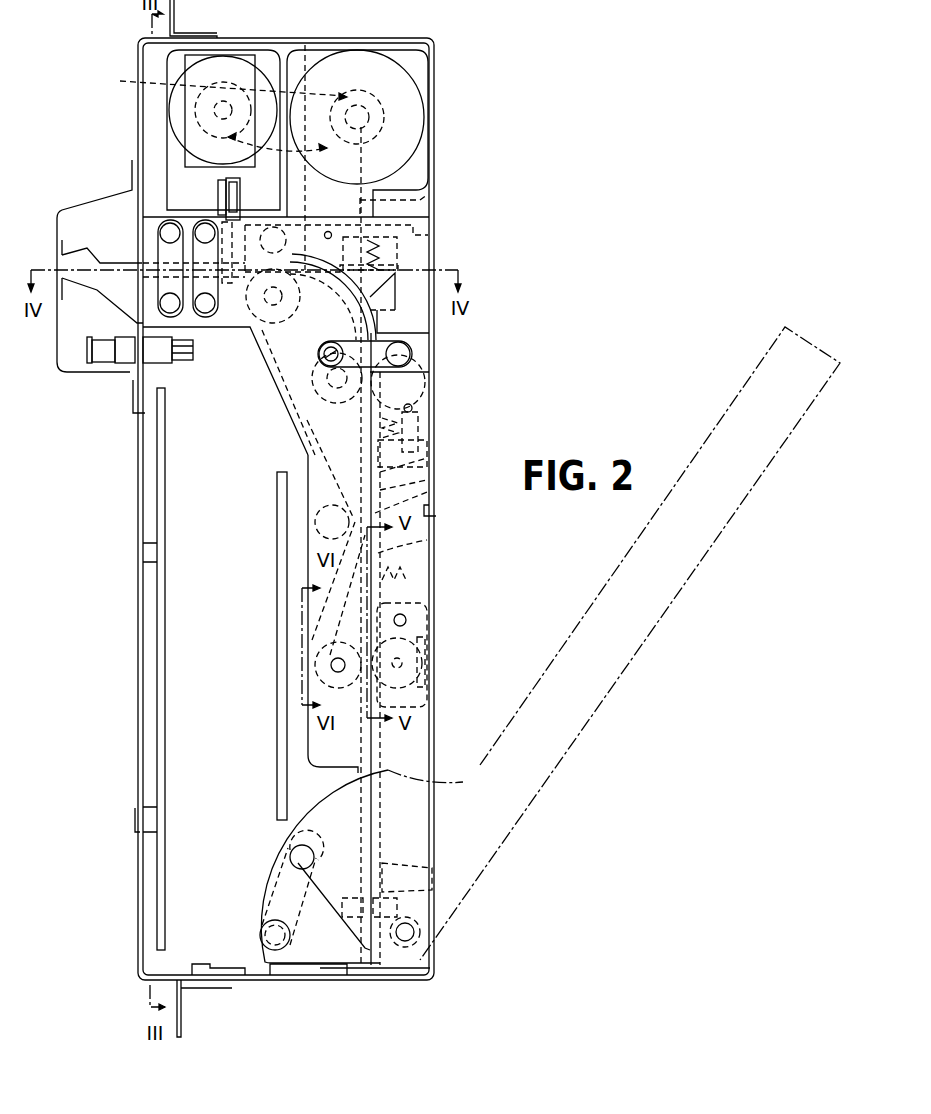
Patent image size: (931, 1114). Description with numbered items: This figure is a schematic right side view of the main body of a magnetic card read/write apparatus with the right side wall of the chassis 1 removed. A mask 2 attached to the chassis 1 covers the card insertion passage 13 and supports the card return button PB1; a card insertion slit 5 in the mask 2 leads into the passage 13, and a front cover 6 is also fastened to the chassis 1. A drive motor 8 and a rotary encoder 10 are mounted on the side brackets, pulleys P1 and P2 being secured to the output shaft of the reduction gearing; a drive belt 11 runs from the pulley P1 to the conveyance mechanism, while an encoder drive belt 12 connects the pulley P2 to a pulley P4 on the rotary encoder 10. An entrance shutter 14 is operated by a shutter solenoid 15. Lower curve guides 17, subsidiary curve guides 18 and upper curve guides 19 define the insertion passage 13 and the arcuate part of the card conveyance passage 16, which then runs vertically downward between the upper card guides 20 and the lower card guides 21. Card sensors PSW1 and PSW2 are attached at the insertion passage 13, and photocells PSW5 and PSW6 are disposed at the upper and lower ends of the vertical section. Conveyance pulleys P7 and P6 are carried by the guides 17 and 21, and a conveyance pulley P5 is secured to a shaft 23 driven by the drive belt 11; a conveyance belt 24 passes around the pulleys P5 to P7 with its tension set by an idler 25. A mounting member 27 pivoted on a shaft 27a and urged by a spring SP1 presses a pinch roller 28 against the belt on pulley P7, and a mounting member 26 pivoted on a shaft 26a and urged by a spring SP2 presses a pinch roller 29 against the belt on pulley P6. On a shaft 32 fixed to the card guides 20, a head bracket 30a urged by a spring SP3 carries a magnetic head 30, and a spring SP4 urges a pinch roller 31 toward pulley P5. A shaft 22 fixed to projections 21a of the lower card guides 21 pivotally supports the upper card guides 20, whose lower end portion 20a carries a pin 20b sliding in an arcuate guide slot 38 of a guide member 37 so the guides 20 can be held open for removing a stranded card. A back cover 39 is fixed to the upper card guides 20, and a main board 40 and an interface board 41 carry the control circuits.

The chassis 1 is at (393, 45).
The mask 2 is at (63, 352).
The card insertion slit 5 is at (103, 272).
The front cover 6 is at (143, 450).
The drive motor 8 is at (418, 92).
The rotary encoder 10 is at (178, 102).
The drive belt 11 is at (429, 196).
The encoder drive belt 12 is at (306, 50).
The card insertion passage 13 is at (135, 256).
The entrance shutter 14 is at (220, 200).
The shutter solenoid 15 is at (195, 125).
The card conveyance passage 16 is at (430, 470).
The lower curve guides 17 is at (393, 280).
The subsidiary curve guides 18 is at (148, 237).
The upper curve guides 19 is at (374, 327).
The upper card guides 20 is at (403, 755).
The lower end portion 20a is at (310, 905).
The pin 20b is at (277, 965).
The lower card guides 21 is at (320, 745).
The projections 21a is at (394, 978).
The shaft 22 is at (414, 941).
The shaft 23 is at (338, 657).
The conveyance belt 24 is at (430, 538).
The idler 25 is at (430, 485).
The mounting member 26 is at (430, 353).
The shaft 26a is at (412, 408).
The mounting member 27 is at (430, 216).
The shaft 27a is at (331, 231).
The pinch roller 28 is at (262, 222).
The pinch roller 29 is at (432, 386).
The magnetic head 30 is at (426, 695).
The head bracket 30a is at (412, 606).
The pinch roller 31 is at (424, 660).
The shaft 32 is at (407, 620).
The guide members 37 is at (250, 893).
The arcuate guide slot 38 is at (307, 881).
The back cover 39 is at (447, 513).
The main board 40 is at (157, 485).
The interface board 41 is at (276, 500).
The pulley P1 is at (374, 114).
The pulley P2 is at (362, 90).
The pulley P4 is at (221, 110).
The conveyance pulley P5 is at (278, 655).
The conveyance pulley P6 is at (322, 405).
The conveyance pulley P7 is at (268, 332).
The card return button PB1 is at (90, 345).
The card sensor PSW1 is at (178, 292).
The card sensor PSW2 is at (212, 305).
The photocell PSW5 is at (430, 333).
The photocell PSW6 is at (458, 910).
The spring SP1 is at (398, 247).
The spring SP2 is at (432, 417).
The spring SP3 is at (451, 565).
The spring SP4 is at (394, 573).